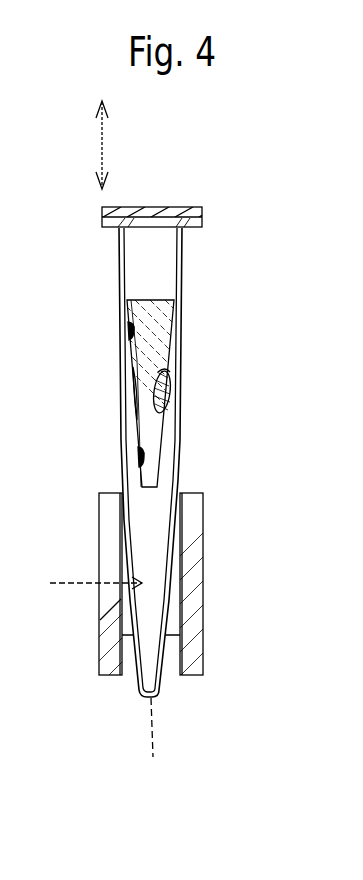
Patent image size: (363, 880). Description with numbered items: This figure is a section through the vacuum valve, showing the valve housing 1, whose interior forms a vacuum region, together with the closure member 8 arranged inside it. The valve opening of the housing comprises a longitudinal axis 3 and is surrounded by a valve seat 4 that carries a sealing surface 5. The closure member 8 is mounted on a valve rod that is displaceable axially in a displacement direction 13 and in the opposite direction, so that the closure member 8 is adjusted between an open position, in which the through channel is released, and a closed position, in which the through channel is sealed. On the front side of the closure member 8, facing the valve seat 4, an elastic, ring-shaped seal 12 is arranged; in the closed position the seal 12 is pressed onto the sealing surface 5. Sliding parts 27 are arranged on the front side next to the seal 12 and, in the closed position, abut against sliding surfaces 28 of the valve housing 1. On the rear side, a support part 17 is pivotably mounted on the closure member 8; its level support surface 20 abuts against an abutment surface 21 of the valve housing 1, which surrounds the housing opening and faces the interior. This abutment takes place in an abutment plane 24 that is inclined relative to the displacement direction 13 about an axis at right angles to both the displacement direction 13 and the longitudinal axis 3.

The valve housing 1 is at (212, 613).
The longitudinal axis 3 is at (68, 583).
The valve seat 4 is at (134, 532).
The sealing surface 5 is at (120, 600).
The closure member 8 is at (161, 318).
The elastic seal 12 is at (141, 392).
The displacement direction 13 is at (100, 143).
The support part 17 is at (165, 375).
The support surface 20 is at (168, 389).
The abutment surface 21 is at (158, 577).
The abutment plane 24 is at (155, 732).
The sliding part 27 is at (128, 326).
The sliding surface 28 is at (139, 455).